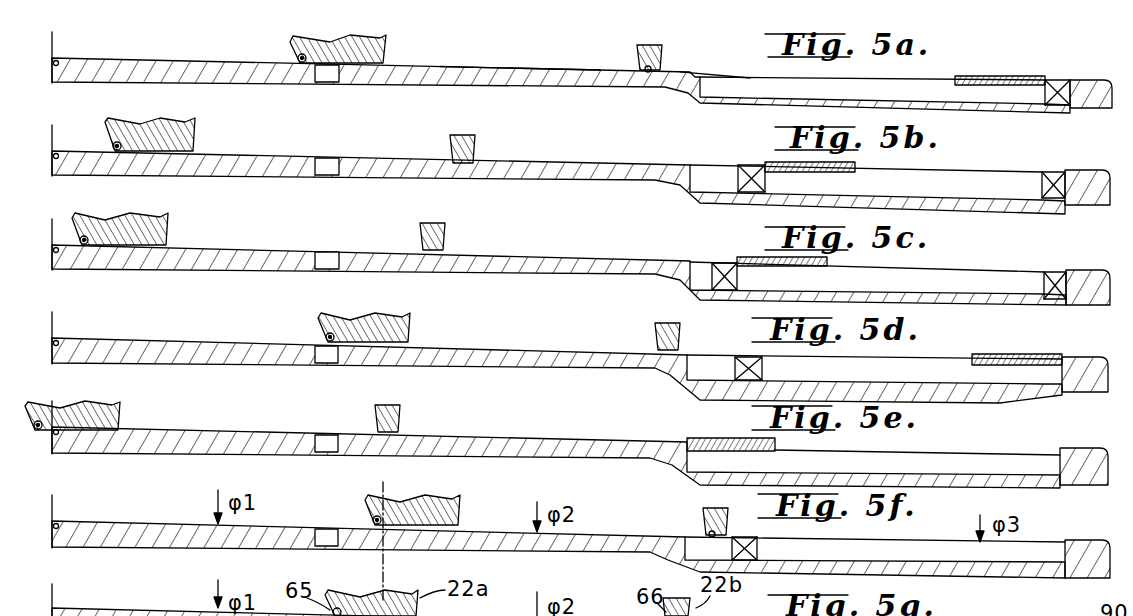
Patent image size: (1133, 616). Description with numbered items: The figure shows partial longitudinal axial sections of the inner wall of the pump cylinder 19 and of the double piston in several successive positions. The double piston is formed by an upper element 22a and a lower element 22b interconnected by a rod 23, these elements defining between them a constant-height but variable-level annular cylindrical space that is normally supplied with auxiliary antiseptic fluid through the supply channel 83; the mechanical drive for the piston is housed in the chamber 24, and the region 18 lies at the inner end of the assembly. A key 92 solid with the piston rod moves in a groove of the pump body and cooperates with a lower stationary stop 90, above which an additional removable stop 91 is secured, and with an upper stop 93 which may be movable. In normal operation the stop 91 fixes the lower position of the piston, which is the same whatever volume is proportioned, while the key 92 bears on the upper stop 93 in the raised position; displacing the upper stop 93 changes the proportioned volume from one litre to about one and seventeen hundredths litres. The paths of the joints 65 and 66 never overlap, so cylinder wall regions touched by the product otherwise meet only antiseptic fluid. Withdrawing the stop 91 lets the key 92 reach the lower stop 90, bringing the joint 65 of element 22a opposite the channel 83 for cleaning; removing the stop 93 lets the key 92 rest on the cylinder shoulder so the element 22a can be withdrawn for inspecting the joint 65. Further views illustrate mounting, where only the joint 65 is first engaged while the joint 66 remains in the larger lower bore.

In FIG. 5A, the first shank section 18 is at (561, 73).
In FIG. 5A, the cylinder 19 is at (463, 65).
In FIG. 5A, the upper element 22a is at (385, 47).
In FIG. 5B, the upper element 22a is at (185, 135).
In FIG. 5C, the upper element 22a is at (170, 218).
In FIG. 5D, the upper element 22a is at (410, 326).
In FIG. 5E, the upper element 22a is at (110, 400).
In FIG. 5F, the upper element 22a is at (455, 500).
In FIG. 5A, the lower element 22b is at (640, 52).
In FIG. 5B, the lower element 22b is at (475, 140).
In FIG. 5C, the lower element 22b is at (445, 228).
In FIG. 5D, the lower element 22b is at (657, 332).
In FIG. 5E, the lower element 22b is at (400, 415).
In FIG. 5F, the lower element 22b is at (703, 512).
In FIG. 5A, the rod 23 is at (550, 52).
In FIG. 5A, the chamber 24 is at (715, 57).
In FIG. 5A, the joint 65 is at (300, 55).
In FIG. 5B, the joint 65 is at (117, 146).
In FIG. 5C, the joint 65 is at (84, 240).
In FIG. 5D, the joint 65 is at (323, 337).
In FIG. 5E, the joint 65 is at (38, 430).
In FIG. 5F, the joint 65 is at (377, 520).
In FIG. 5A, the joint 66 is at (648, 73).
In FIG. 5F, the joint 66 is at (708, 528).
In FIG. 5D, the auxiliary antiseptic fluid supply channel 83 is at (332, 364).
In FIG. 5A, the lower stationary stop 90 is at (1106, 108).
In FIG. 5B, the lower stationary stop 90 is at (1087, 187).
In FIG. 5C, the lower stationary stop 90 is at (1100, 305).
In FIG. 5D, the lower stationary stop 90 is at (1085, 378).
In FIG. 5E, the lower stationary stop 90 is at (1095, 486).
In FIG. 5F, the lower stationary stop 90 is at (1085, 562).
In FIG. 5A, the additional removable stop 91 is at (1056, 105).
In FIG. 5B, the additional removable stop 91 is at (1053, 200).
In FIG. 5C, the additional removable stop 91 is at (1055, 285).
In FIG. 5A, the key 92 is at (955, 82).
In FIG. 5B, the key 92 is at (853, 172).
In FIG. 5C, the key 92 is at (827, 265).
In FIG. 5D, the key 92 is at (972, 360).
In FIG. 5E, the key 92 is at (775, 450).
In FIG. 5B, the upper stop 93 is at (752, 167).
In FIG. 5C, the upper stop 93 is at (726, 265).
In FIG. 5D, the upper stop 93 is at (738, 368).
In FIG. 5F, the upper stop 93 is at (759, 549).